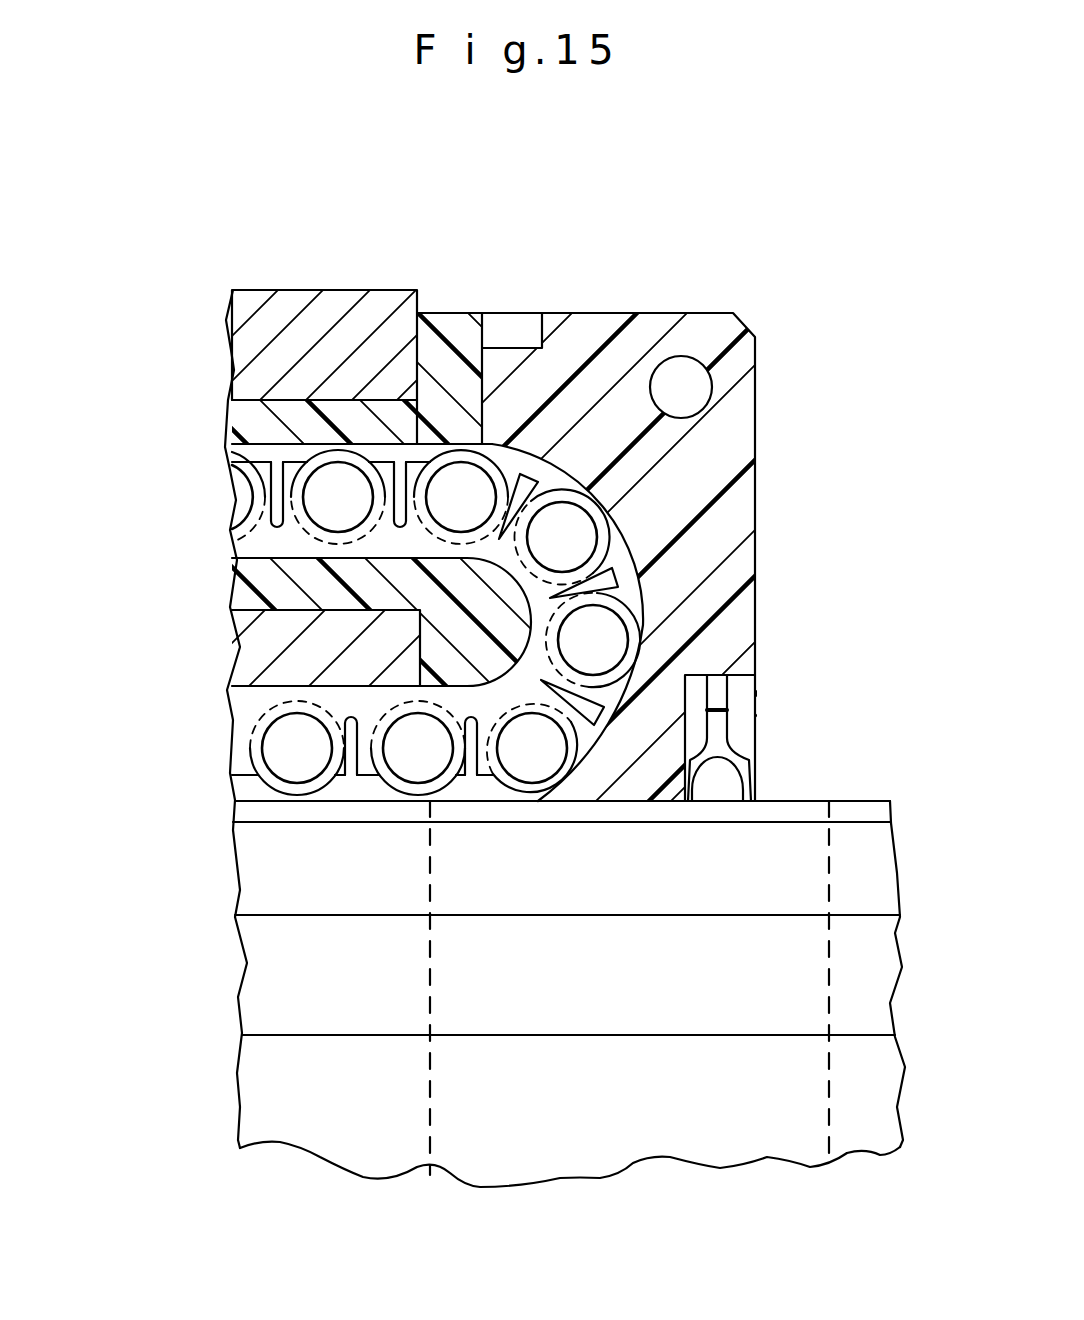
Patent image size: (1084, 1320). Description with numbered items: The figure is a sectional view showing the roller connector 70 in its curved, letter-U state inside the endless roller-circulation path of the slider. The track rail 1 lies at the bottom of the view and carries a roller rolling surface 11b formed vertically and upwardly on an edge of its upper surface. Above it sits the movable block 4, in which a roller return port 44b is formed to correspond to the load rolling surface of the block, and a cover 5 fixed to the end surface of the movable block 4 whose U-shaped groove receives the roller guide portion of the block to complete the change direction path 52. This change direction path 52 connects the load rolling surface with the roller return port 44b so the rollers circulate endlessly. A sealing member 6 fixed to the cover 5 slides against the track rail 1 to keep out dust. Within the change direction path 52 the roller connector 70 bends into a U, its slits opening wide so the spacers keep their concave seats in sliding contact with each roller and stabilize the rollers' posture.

The track rail 1 is at (858, 782).
The movable block 4 is at (388, 268).
The cover 5 is at (733, 430).
The sealing member 6 is at (757, 717).
The roller rolling surface 11b is at (292, 795).
The roller return port 44b is at (265, 456).
The change direction path 52 is at (513, 447).
The roller connector 70 is at (616, 630).